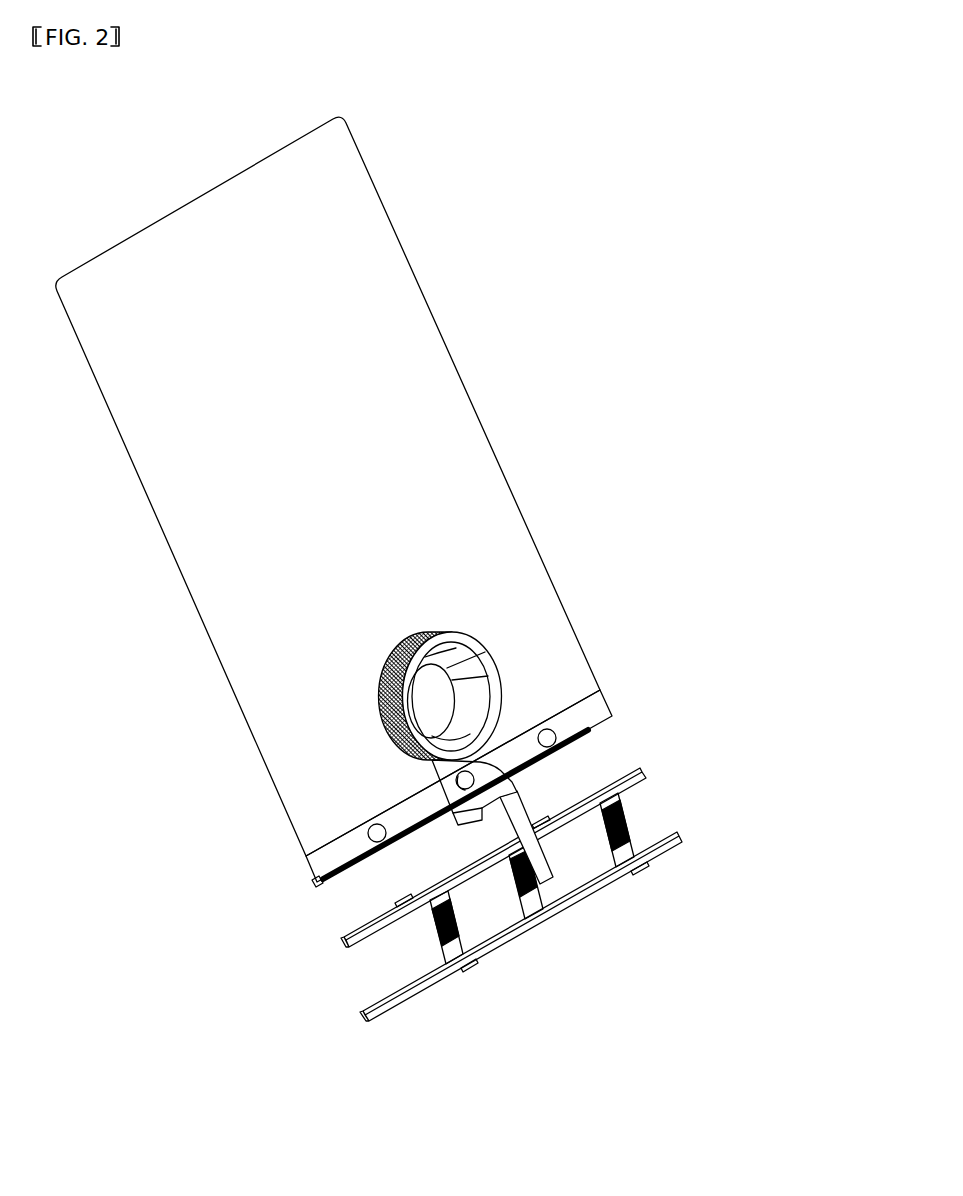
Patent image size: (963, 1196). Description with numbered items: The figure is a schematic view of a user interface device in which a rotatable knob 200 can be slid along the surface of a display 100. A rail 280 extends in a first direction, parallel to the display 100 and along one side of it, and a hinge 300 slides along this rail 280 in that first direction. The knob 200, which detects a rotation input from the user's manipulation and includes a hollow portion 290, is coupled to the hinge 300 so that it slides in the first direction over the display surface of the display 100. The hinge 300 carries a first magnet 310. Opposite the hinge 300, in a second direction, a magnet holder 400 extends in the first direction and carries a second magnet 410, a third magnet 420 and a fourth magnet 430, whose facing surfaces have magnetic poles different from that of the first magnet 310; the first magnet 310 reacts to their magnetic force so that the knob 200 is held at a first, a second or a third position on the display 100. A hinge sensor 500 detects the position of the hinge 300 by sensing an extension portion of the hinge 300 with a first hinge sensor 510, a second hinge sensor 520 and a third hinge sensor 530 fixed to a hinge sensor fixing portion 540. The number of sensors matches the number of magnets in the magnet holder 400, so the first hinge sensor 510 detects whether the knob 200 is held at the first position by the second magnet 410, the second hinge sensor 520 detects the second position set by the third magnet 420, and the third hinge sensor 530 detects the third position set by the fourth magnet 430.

The display 100 is at (406, 291).
The knob 200 is at (437, 658).
The rail 280 is at (312, 885).
The hollow portion 290 is at (414, 637).
The hinge 300 is at (449, 822).
The first magnet 310 is at (474, 780).
The magnet holder 400 is at (474, 794).
The second magnet 410 is at (378, 843).
The third magnet 420 is at (500, 828).
The fourth magnet 430 is at (596, 747).
The hinge sensor 500 is at (570, 902).
The first hinge sensor 510 is at (467, 927).
The second hinge sensor 520 is at (548, 893).
The third hinge sensor 530 is at (633, 837).
The hinge sensor fixing portion 540 is at (356, 941).